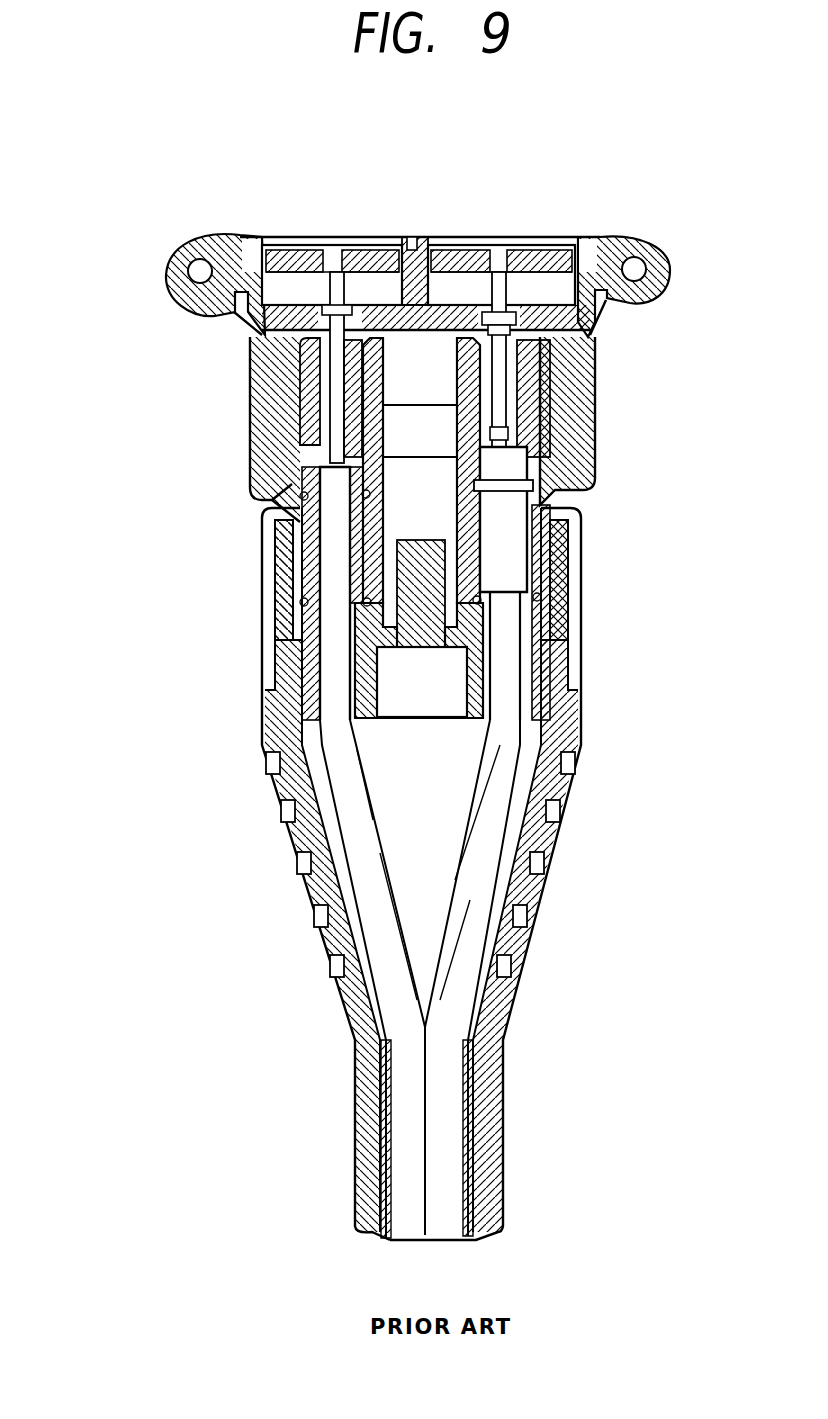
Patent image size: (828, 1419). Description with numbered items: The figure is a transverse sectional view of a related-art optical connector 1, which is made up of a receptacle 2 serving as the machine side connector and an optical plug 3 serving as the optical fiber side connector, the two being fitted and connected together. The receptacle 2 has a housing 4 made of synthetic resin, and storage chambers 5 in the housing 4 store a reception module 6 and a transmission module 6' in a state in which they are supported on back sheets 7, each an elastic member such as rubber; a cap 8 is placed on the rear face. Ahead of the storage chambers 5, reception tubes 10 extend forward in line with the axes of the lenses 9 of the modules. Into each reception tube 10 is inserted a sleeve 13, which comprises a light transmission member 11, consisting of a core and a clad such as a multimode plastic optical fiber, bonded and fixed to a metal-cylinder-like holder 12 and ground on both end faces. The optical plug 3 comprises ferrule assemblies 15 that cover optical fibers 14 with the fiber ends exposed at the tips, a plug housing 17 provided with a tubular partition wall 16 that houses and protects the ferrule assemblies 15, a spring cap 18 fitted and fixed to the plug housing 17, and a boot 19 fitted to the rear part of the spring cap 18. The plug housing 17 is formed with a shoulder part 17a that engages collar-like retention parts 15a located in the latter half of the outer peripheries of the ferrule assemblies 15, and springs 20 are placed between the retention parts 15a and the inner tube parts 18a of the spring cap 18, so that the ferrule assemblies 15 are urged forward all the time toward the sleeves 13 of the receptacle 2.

The optical connector 1 is at (616, 217).
The receptacle 2 is at (663, 238).
The optical plug 3 is at (590, 712).
The housing 4 is at (282, 486).
The storage chamber 5 is at (246, 312).
The reception module 6 is at (332, 223).
The transmission module 6' is at (507, 233).
The back sheet 7 is at (280, 247).
The cap 8 is at (440, 245).
The lens 9 is at (373, 247).
The reception tube 10 is at (294, 430).
The light transmission member 11 is at (292, 384).
The holder 12 is at (282, 348).
The sleeve 13 is at (82, 338).
The optical fiber 14 is at (300, 446).
The ferrule assembly 15 is at (300, 480).
The retention part 15a is at (263, 518).
The tubular partition wall 16 is at (486, 404).
The plug housing 17 is at (296, 398).
The shoulder part 17a is at (460, 478).
The spring cap 18 is at (588, 658).
The inner tube part 18a is at (302, 632).
The boot 19 is at (556, 812).
The spring 20 is at (300, 598).